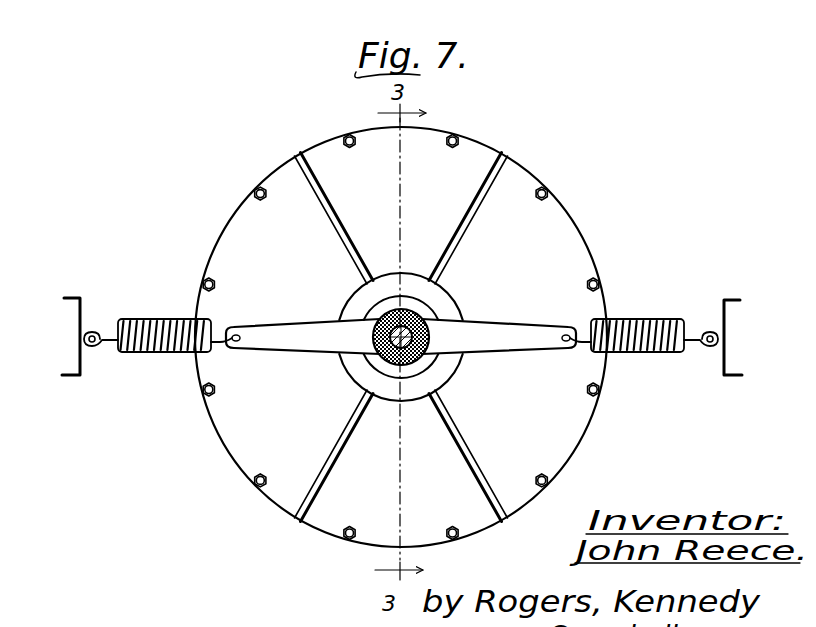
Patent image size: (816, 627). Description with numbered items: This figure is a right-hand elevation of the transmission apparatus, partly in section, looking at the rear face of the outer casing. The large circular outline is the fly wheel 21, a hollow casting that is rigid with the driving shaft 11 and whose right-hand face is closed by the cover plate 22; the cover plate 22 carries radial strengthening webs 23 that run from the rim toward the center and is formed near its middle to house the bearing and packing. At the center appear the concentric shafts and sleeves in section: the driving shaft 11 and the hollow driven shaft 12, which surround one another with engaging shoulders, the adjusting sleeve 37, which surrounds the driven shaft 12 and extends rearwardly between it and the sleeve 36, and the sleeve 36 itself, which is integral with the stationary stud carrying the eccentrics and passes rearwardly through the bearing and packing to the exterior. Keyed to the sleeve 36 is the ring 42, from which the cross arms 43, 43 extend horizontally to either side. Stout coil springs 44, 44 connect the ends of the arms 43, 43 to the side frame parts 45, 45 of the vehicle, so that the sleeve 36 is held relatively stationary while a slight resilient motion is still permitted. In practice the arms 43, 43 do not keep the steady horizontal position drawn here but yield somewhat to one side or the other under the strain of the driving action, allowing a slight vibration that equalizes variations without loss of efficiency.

The driving shaft 11 is at (439, 356).
The driven shaft 12 is at (382, 318).
The fly wheel 21 is at (578, 213).
The cover plate 22 is at (358, 327).
The strengthening webs 23 is at (342, 215).
The sleeve 36 is at (368, 355).
The adjusting sleeve 37 is at (403, 313).
The ring 42 is at (425, 308).
The side arms 43 is at (401, 336).
The coil springs 44 is at (150, 317).
The side frame parts 45 is at (400, 336).